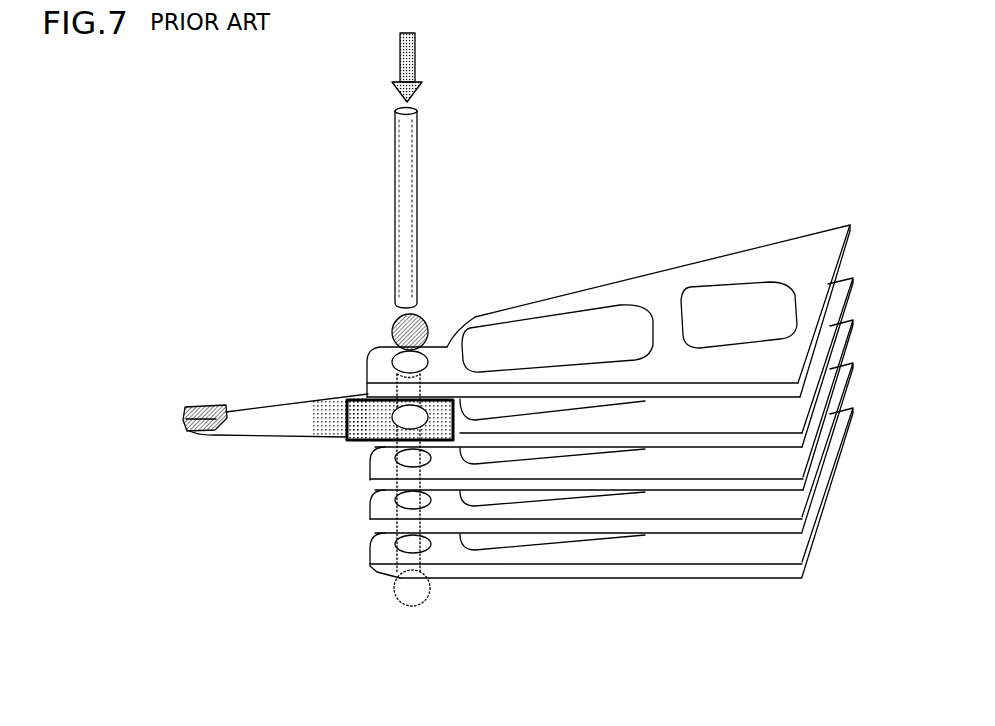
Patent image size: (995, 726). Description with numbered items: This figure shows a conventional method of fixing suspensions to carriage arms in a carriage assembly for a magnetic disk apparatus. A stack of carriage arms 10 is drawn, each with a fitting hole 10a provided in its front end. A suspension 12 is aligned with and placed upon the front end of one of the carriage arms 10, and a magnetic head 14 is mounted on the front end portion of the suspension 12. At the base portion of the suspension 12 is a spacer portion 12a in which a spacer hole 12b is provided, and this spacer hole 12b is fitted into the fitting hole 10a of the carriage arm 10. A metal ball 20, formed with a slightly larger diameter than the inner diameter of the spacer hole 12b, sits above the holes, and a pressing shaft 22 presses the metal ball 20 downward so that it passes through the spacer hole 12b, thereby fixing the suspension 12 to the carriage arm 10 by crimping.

The carriage arms 10 is at (657, 284).
The fitting holes 10a is at (417, 363).
The suspension 12 is at (260, 418).
The spacer portions 12a is at (367, 407).
The spacer holes 12b is at (402, 420).
The magnetic head 14 is at (200, 405).
The metal ball 20 is at (398, 320).
The pressing shaft 22 is at (405, 158).